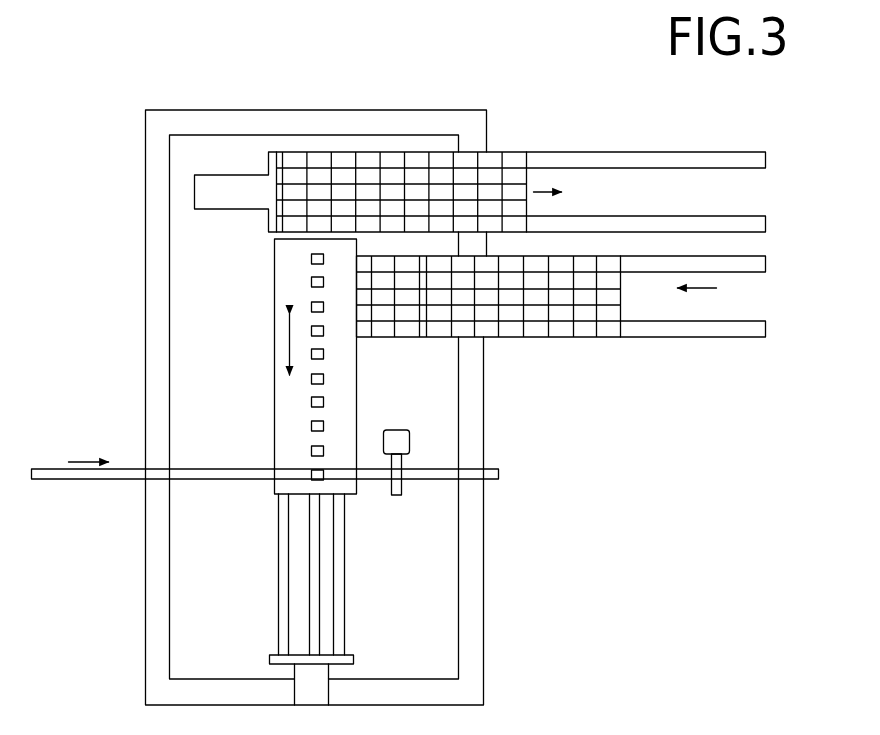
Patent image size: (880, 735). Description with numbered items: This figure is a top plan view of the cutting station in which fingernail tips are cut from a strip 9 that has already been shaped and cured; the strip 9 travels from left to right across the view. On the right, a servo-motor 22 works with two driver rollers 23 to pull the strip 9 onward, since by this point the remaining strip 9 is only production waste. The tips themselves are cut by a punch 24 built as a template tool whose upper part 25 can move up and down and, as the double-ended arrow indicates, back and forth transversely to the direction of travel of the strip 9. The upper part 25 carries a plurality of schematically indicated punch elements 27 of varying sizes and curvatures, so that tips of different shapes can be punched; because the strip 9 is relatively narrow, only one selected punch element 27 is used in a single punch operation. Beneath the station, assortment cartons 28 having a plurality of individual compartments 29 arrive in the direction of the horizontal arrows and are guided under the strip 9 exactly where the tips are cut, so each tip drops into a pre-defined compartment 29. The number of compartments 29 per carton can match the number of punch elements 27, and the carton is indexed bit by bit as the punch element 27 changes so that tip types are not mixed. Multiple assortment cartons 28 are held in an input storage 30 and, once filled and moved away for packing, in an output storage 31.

The strip 9 is at (478, 479).
The servo-motor 22 is at (388, 445).
The driver rollers 23 is at (398, 490).
The punch 24 is at (225, 408).
The upper part 25 is at (276, 387).
The punch elements 27 is at (310, 474).
The assortment cartons 28 is at (317, 148).
The compartments 29 is at (322, 230).
The input storage 30 is at (631, 303).
The output storage 31 is at (433, 138).